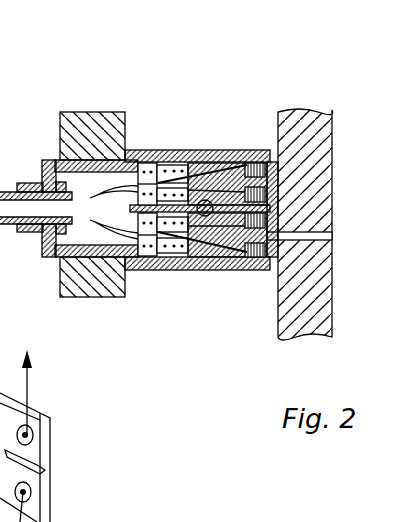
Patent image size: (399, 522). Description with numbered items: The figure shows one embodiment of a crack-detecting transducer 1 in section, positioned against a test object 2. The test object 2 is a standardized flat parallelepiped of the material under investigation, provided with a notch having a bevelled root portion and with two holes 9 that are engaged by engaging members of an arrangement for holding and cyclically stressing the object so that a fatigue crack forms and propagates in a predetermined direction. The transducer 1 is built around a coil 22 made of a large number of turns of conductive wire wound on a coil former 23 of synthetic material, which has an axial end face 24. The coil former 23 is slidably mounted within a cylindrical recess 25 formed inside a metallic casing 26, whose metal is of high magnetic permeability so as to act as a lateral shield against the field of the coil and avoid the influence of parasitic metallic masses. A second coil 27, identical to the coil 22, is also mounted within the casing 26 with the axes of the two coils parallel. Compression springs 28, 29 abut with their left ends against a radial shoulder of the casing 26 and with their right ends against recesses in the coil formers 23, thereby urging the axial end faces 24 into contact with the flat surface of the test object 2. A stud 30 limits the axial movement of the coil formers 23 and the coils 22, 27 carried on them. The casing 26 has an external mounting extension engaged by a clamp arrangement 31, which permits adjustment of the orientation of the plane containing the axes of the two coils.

The crack-detecting transducer 1 is at (223, 115).
The test object 2 is at (317, 297).
The holes 9 is at (27, 433).
The coil 22 is at (252, 270).
The coil former 23 is at (190, 270).
The axial end face 24 is at (270, 175).
The cylindrical recess 25 is at (147, 163).
The metallic casing 26 is at (80, 127).
The second coil 27 is at (263, 152).
The compression spring 28 is at (150, 258).
The compression spring 29 is at (160, 165).
The stud 30 is at (227, 270).
The clamp arrangement 31 is at (62, 282).